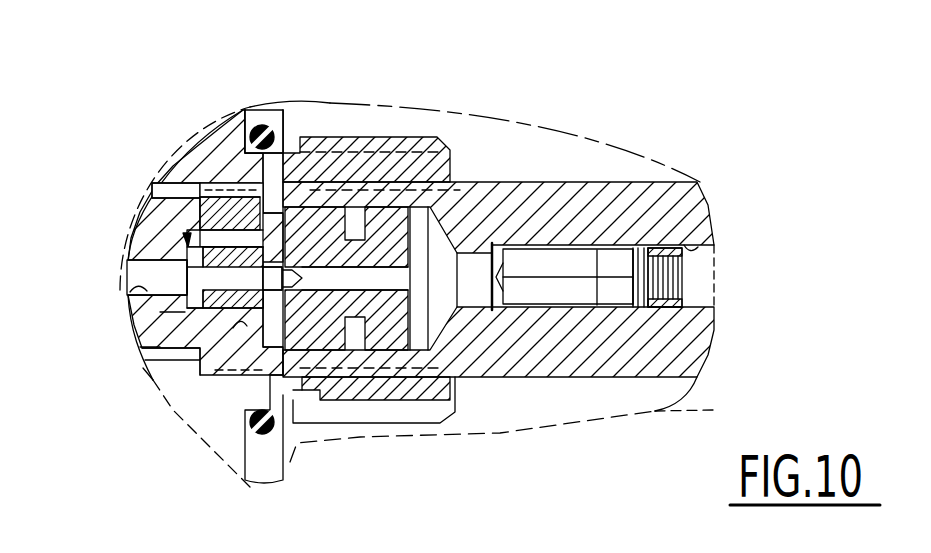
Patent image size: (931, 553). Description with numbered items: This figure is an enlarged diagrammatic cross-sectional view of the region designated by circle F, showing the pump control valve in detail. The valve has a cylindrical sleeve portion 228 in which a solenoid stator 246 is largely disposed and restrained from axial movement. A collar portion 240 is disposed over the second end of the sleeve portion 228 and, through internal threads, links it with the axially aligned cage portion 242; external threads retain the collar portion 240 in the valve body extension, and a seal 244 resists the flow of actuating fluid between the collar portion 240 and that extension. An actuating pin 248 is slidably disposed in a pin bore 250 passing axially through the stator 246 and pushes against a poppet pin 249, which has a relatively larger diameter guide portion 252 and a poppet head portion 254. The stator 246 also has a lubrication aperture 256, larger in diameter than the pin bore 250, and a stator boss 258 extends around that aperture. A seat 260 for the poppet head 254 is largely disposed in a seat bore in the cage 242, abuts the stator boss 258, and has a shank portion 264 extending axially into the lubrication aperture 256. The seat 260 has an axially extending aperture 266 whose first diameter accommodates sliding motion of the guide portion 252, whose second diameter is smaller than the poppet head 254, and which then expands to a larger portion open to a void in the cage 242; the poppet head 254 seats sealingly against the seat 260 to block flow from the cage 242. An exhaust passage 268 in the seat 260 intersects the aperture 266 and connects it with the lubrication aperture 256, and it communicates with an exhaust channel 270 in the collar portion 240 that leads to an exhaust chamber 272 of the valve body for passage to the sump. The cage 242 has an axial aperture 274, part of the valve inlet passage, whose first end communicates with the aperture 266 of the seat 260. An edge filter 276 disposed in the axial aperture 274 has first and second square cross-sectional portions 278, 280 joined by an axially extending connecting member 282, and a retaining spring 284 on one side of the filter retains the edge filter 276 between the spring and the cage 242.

The cylindrical sleeve portion 228 is at (178, 247).
The shank portion 264 is at (205, 247).
The seal 244 is at (265, 124).
The stator boss 258 is at (284, 135).
The collar portion 240 is at (370, 150).
The axially extending aperture 266 is at (375, 270).
The cage portion 242 is at (670, 182).
The poppet pin 249 is at (185, 258).
The actuating pin 248 is at (140, 272).
The pin bore 250 is at (135, 290).
The guide portion 252 is at (160, 314).
The solenoid stator 246 is at (145, 345).
The poppet head portion 254 is at (155, 381).
The lubrication aperture 256 is at (233, 328).
The exhaust passage 268 is at (277, 297).
The seat 260 is at (283, 395).
The exhaust channel 270 is at (295, 400).
The exhaust chamber 272 is at (420, 425).
The first square cross-sectional portion 278 is at (493, 285).
The edge filter 276 is at (563, 308).
The second square cross-sectional portion 280 is at (633, 308).
The connecting member 282 is at (597, 308).
The axial aperture 274 is at (705, 250).
The retaining spring 284 is at (682, 284).
The circle F is at (713, 410).